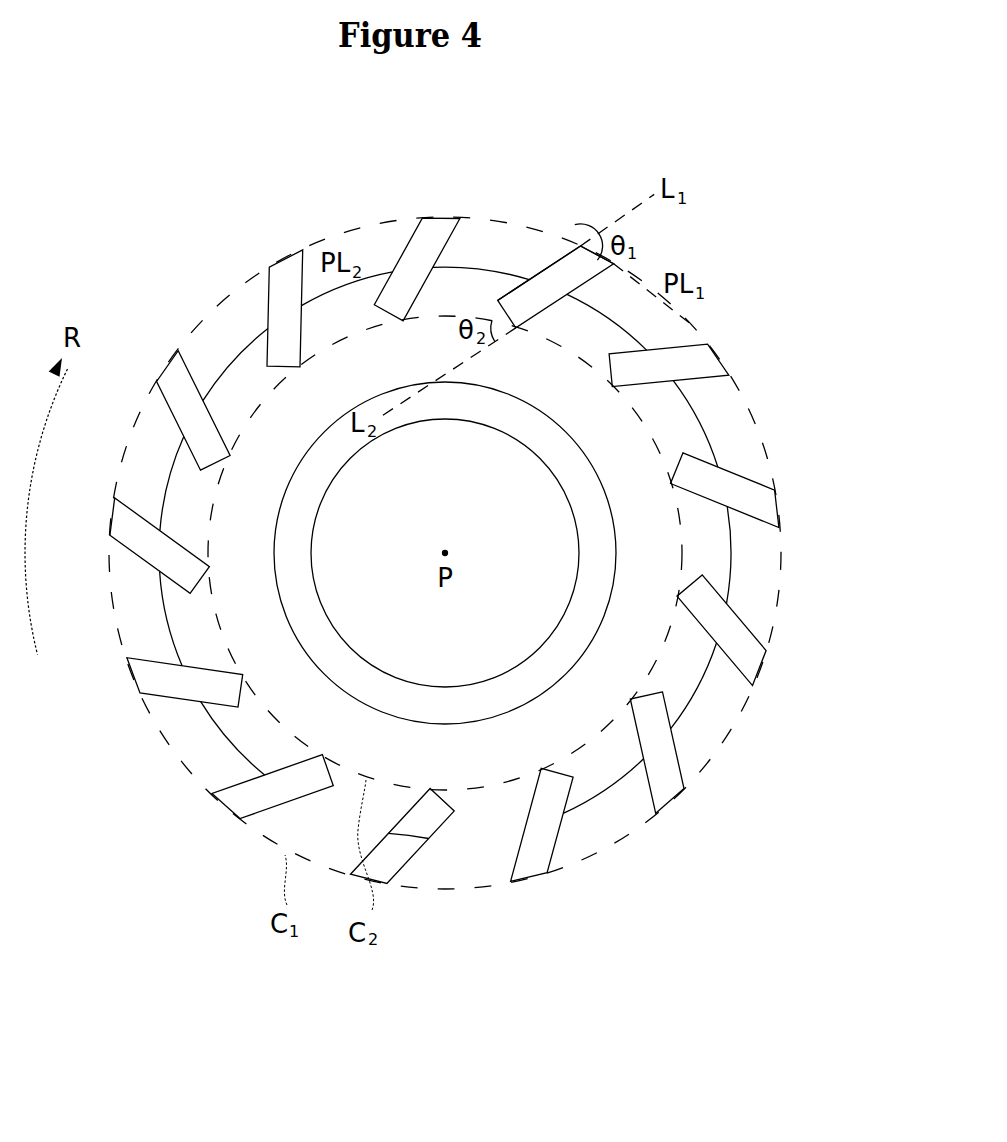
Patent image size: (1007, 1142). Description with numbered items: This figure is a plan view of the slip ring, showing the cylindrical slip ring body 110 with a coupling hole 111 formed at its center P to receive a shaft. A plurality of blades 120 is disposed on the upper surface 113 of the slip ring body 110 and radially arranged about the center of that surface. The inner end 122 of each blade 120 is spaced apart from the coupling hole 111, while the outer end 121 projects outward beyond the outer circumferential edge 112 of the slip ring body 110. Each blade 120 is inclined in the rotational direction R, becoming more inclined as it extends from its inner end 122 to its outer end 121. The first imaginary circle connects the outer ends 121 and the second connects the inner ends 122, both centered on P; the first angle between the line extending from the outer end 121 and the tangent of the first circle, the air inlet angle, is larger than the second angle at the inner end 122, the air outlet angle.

The slip ring body 110 is at (752, 558).
The coupling hole 111 is at (511, 617).
The outer circumferential edge 112 is at (475, 838).
The upper surface 113 is at (594, 738).
The blades 120 is at (546, 250).
The outer end 121 is at (567, 250).
The inner end 122 is at (527, 277).